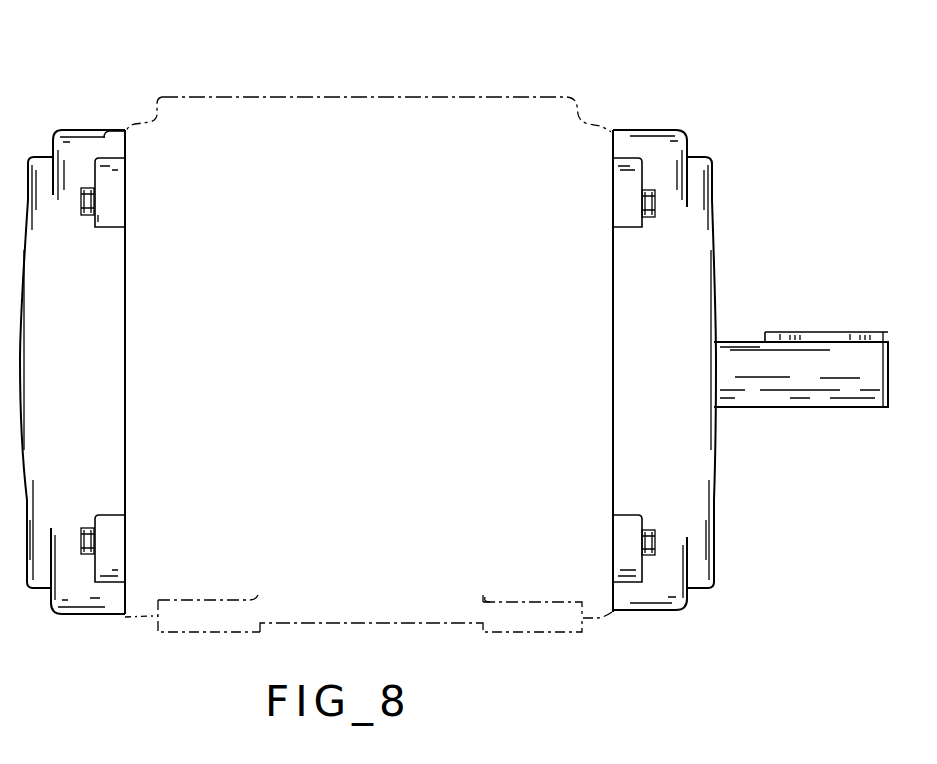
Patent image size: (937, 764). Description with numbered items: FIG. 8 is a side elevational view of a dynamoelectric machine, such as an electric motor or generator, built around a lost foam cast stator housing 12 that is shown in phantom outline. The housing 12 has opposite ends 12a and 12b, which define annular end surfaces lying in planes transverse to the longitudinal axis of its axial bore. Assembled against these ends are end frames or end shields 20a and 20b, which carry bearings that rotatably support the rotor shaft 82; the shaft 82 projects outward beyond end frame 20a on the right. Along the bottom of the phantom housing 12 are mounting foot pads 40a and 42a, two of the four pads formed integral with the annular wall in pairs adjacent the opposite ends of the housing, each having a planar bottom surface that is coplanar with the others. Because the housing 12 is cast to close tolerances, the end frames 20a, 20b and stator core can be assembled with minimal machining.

The stator housing 12 is at (500, 98).
The end of housing 12a is at (628, 137).
The end of housing 12b is at (124, 136).
The end frame 20a is at (658, 131).
The end frame 20b is at (72, 130).
The mounting foot pad 40a is at (528, 634).
The mounting foot pad 42a is at (216, 634).
The rotor shaft 82 is at (794, 395).